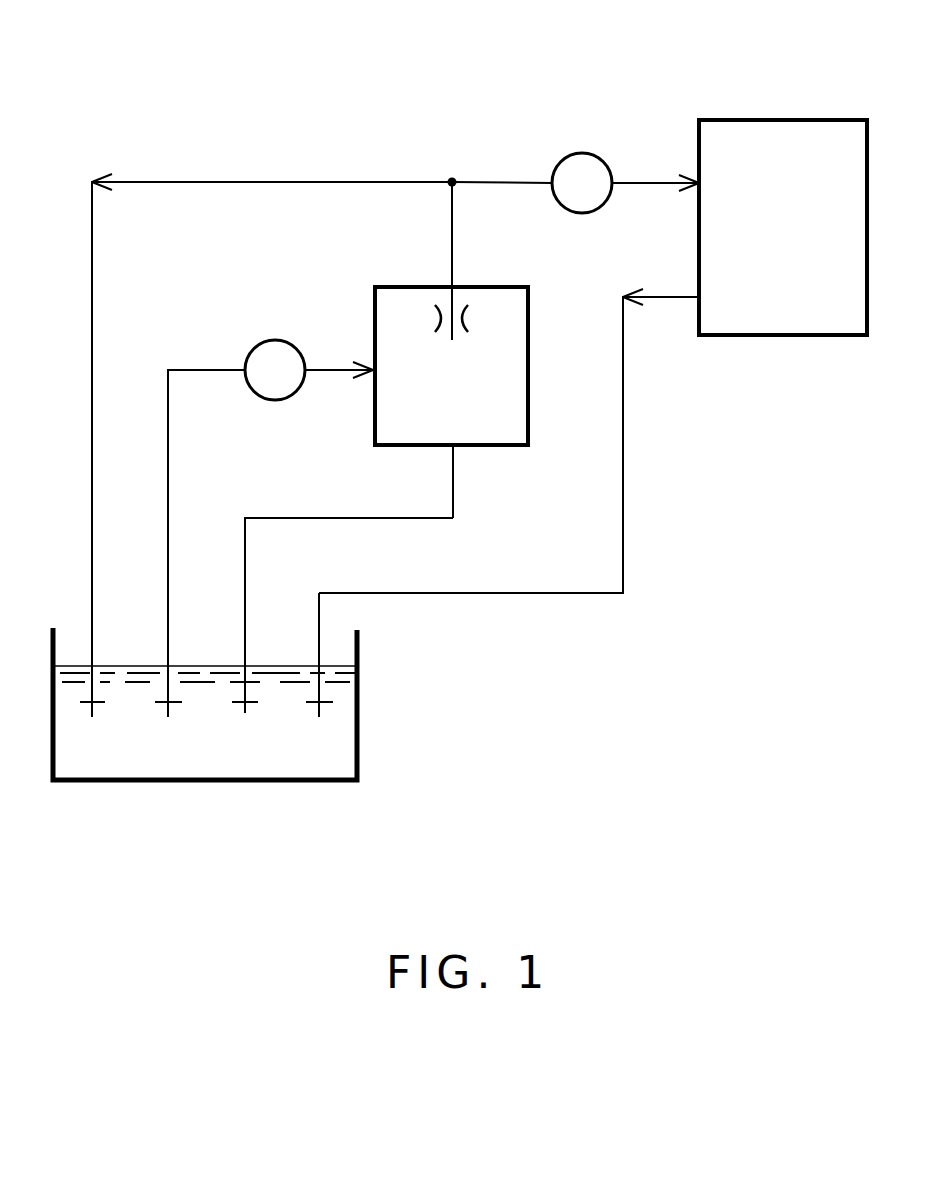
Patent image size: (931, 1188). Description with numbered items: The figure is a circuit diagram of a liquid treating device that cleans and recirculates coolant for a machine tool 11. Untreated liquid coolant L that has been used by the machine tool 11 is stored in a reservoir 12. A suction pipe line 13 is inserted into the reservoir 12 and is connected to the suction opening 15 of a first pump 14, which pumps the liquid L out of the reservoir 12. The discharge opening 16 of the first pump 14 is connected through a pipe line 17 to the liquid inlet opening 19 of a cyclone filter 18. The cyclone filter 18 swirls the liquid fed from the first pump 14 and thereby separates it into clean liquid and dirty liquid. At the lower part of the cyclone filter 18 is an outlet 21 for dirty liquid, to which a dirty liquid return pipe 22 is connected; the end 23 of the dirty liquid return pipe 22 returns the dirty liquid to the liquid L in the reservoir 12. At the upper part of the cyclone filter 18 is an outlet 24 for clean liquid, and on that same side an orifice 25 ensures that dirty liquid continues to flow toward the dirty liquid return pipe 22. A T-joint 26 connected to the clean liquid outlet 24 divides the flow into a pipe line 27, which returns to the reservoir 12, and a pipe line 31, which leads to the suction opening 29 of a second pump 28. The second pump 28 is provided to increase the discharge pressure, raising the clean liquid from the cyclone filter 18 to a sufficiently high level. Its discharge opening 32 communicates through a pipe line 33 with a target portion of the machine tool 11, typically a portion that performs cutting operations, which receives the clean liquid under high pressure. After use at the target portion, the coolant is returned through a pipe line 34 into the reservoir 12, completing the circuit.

The machine tool 11 is at (788, 120).
The reservoir 12 is at (359, 727).
The suction pipe line 13 is at (170, 475).
The first pump 14 is at (270, 340).
The suction opening 15 is at (255, 387).
The discharge opening 16 is at (297, 385).
The pipe line 17 is at (334, 368).
The cyclone filter 18 is at (530, 315).
The liquid inlet opening 19 is at (373, 378).
The outlet 21 is at (455, 449).
The dirty liquid return pipe 22 is at (263, 522).
The end 23 is at (244, 714).
The outlet for clean liquid 24 is at (453, 287).
The orifice 25 is at (470, 316).
The T-joint 26 is at (448, 179).
The pipe line 27 is at (254, 178).
The second pump 28 is at (582, 153).
The suction opening 29 is at (556, 172).
The pipe line 31 is at (475, 178).
The discharge opening 32 is at (614, 176).
The pipe line 33 is at (655, 187).
The pipe line 34 is at (625, 497).
The liquid coolant L is at (330, 662).